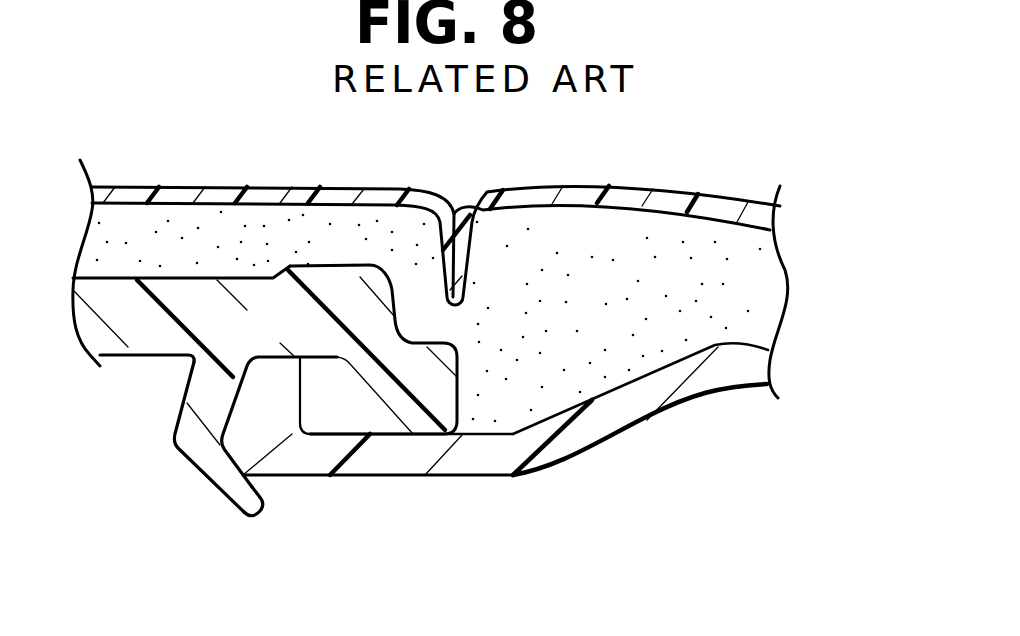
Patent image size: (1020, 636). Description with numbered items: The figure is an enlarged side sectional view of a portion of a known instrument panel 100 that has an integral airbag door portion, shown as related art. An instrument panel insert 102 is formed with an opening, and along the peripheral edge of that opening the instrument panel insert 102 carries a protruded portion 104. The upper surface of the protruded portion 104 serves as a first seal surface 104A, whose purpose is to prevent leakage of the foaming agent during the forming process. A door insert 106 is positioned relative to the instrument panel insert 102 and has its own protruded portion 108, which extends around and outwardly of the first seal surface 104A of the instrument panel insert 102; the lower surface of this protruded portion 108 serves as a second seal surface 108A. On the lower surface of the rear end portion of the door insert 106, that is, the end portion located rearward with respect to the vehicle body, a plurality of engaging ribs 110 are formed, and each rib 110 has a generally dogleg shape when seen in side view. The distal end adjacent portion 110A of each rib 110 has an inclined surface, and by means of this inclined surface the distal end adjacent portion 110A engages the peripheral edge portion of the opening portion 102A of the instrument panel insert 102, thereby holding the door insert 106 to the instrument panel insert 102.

The instrument panel 100 is at (630, 187).
The instrument panel insert 102 is at (563, 470).
The opening portion 102A is at (250, 360).
The protruded portion 104 is at (238, 437).
The first seal surface 104A is at (276, 357).
The door insert 106 is at (135, 363).
The protruded portion 108 is at (495, 430).
The second seal surface 108A is at (495, 430).
The engaging rib 110 is at (177, 457).
The distal end adjacent portion 110A is at (257, 513).